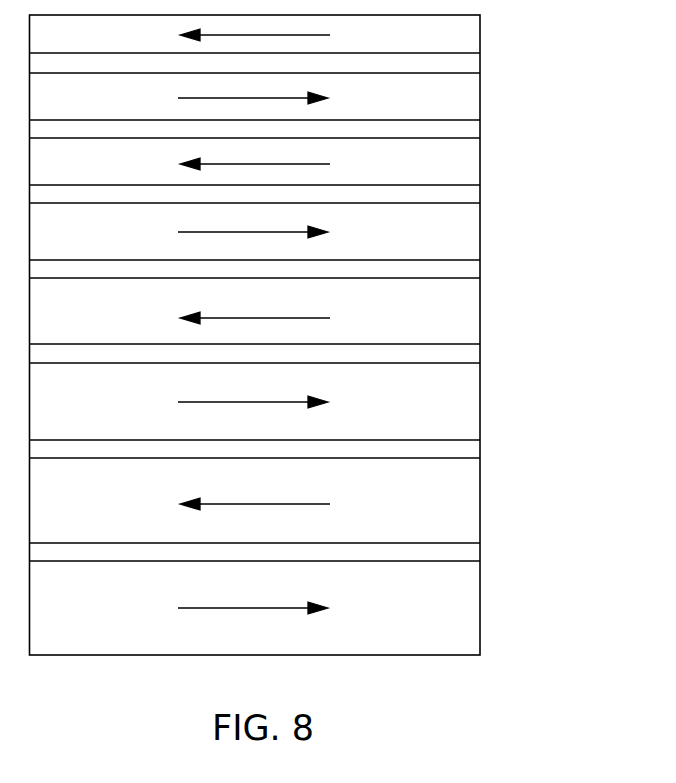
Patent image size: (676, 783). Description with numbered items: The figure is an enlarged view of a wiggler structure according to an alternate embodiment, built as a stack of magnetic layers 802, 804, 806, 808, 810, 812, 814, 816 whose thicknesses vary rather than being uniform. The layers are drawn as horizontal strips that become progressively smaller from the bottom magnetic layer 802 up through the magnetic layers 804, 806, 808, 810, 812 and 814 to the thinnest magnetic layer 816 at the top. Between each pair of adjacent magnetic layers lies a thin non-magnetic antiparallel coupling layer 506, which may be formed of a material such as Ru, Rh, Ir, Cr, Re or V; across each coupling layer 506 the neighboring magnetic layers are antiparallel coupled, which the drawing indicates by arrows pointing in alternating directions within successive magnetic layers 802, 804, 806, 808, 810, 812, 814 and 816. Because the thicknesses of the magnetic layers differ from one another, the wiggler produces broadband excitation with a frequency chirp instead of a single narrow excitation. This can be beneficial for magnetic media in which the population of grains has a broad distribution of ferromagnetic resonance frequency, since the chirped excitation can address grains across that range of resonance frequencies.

The magnetic layer 802 is at (442, 598).
The magnetic layer 804 is at (462, 492).
The magnetic layer 806 is at (452, 407).
The magnetic layer 808 is at (452, 317).
The magnetic layer 810 is at (452, 238).
The magnetic layer 812 is at (452, 167).
The magnetic layer 814 is at (460, 98).
The magnetic layer 816 is at (470, 36).
The interlayer 506 is at (470, 63).